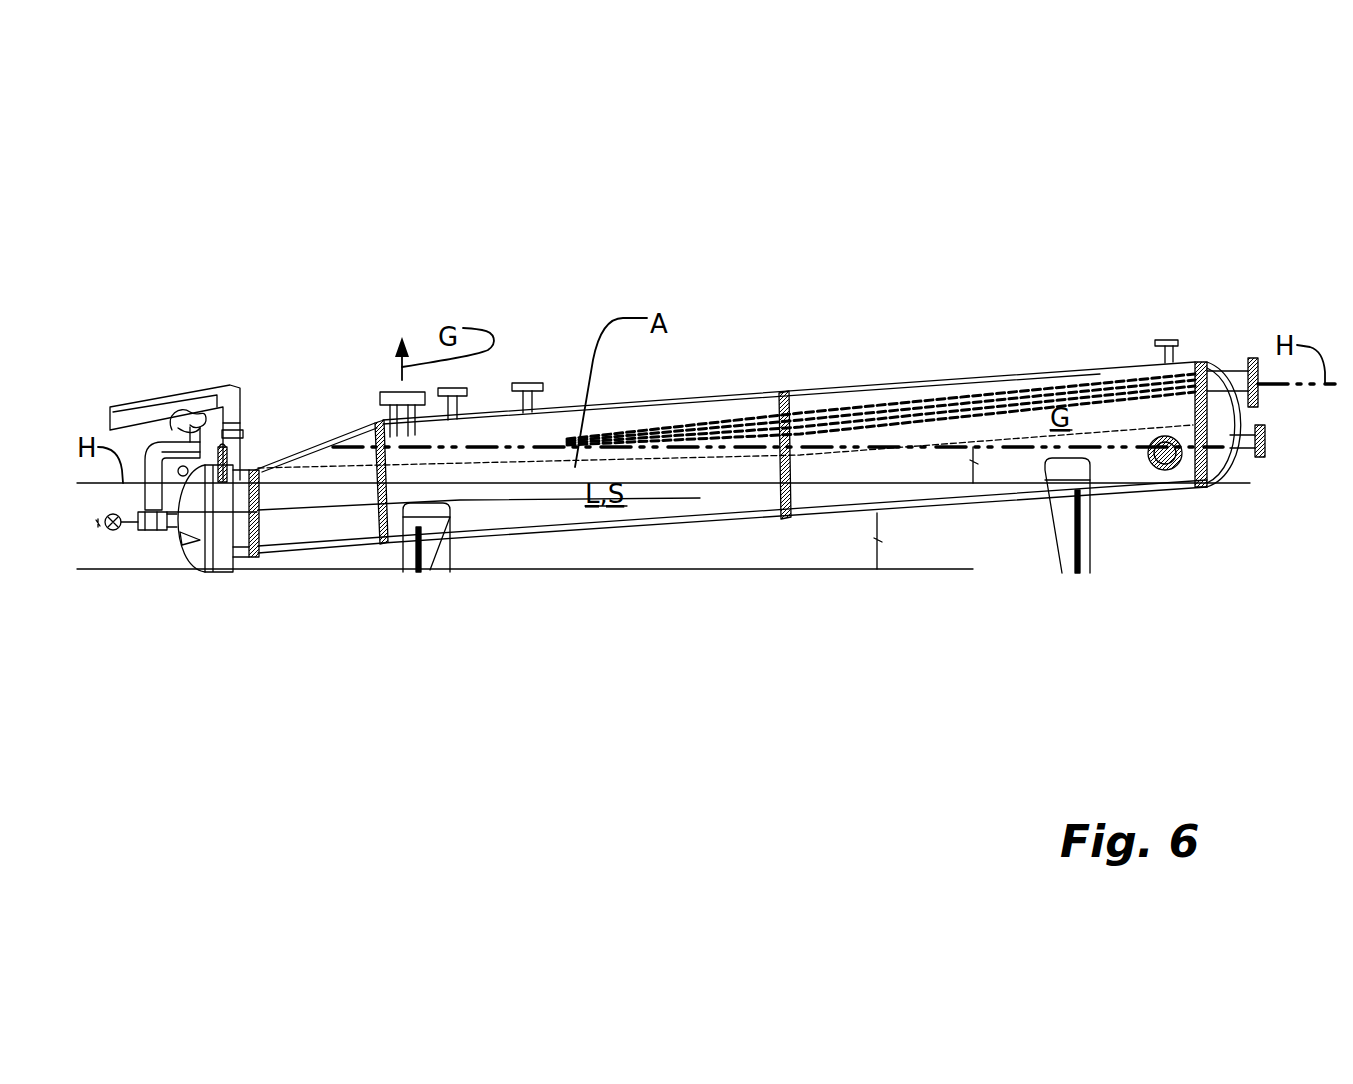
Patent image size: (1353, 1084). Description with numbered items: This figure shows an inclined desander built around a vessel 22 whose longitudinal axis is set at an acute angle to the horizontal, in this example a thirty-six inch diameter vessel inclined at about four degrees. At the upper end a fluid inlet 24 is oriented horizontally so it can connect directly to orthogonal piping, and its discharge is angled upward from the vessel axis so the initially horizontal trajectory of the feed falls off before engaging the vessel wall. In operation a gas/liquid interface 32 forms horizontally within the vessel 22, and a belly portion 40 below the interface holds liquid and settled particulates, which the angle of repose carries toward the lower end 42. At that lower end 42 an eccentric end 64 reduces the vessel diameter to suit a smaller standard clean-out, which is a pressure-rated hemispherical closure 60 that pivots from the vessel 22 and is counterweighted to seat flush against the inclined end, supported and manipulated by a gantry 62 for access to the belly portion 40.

The vessel 22 is at (803, 392).
The fluid inlet 24 is at (1245, 366).
The gas/liquid interface 32 is at (862, 447).
The belly portion 40 is at (498, 508).
The lower end 42 is at (250, 543).
The closure 60 is at (205, 552).
The gantry 62 is at (153, 400).
The eccentric end 64 is at (282, 460).